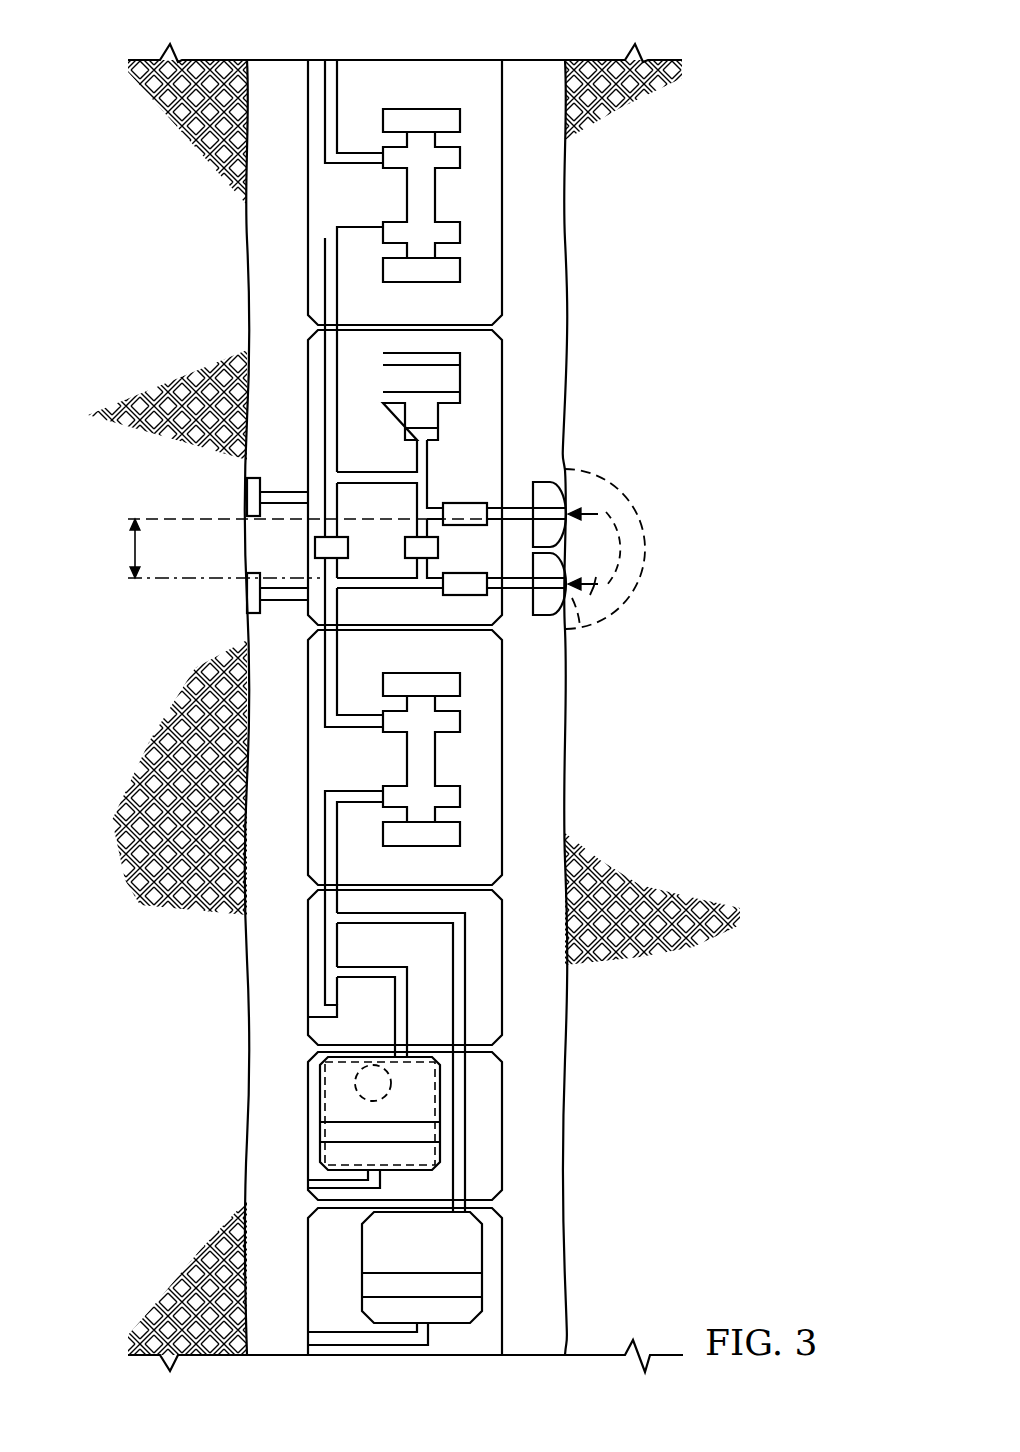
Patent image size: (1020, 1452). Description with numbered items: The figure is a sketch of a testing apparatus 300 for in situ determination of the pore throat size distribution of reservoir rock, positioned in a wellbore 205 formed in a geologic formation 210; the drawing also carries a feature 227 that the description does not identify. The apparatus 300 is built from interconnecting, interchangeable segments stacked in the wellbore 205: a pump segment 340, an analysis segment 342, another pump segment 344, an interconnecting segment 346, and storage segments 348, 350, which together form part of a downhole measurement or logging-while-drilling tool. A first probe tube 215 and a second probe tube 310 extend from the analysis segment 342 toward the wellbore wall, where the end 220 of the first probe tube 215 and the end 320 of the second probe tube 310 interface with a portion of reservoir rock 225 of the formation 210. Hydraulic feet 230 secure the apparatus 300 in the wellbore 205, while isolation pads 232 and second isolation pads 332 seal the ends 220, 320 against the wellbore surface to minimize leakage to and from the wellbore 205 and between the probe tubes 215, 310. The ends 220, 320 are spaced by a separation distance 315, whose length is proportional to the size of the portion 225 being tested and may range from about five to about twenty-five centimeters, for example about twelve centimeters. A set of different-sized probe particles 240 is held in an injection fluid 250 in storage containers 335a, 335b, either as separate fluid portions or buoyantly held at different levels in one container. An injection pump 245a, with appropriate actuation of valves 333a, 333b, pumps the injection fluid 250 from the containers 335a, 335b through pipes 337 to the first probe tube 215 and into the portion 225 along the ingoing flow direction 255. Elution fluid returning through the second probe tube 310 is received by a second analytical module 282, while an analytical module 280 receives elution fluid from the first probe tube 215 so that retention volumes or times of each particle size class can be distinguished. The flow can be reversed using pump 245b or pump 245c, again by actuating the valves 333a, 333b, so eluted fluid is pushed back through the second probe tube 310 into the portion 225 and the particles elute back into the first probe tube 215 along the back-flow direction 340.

The testing apparatus 300 is at (298, 54).
The geologic formation 210 is at (160, 249).
The wellbore 205 is at (245, 308).
The wellbore 227 is at (567, 283).
The second probe tube 310 is at (566, 470).
The first probe tube 215 is at (568, 632).
The pump segment 340 is at (508, 190).
The analysis segment 342 is at (508, 355).
The pump segment 344 is at (508, 757).
The interconnecting segment 346 is at (508, 967).
The storage segment 348 is at (508, 1125).
The storage segment 350 is at (508, 1284).
The pipes 337 is at (330, 948).
The pump 245c is at (405, 195).
The injection pump 245a is at (407, 765).
The pump 245b is at (438, 417).
The valve 333b is at (315, 548).
The valve 333a is at (405, 547).
The second analytical module 282 is at (458, 502).
The analytical module 280 is at (463, 597).
The second isolation pads 332 is at (543, 490).
The isolation pads 232 is at (547, 618).
The end of second probe tube 320 is at (616, 487).
The portion of reservoir rock 225 is at (620, 560).
The ingoing flow direction 255 is at (604, 588).
The end of first probe tube 220 is at (583, 605).
The hydraulic feet 230 is at (247, 498).
The separation distance 315 is at (130, 544).
The set of probe particles 240 is at (362, 1078).
The injection fluid 250 is at (335, 1112).
The storage container 335a is at (317, 1150).
The storage container 335b is at (482, 1248).